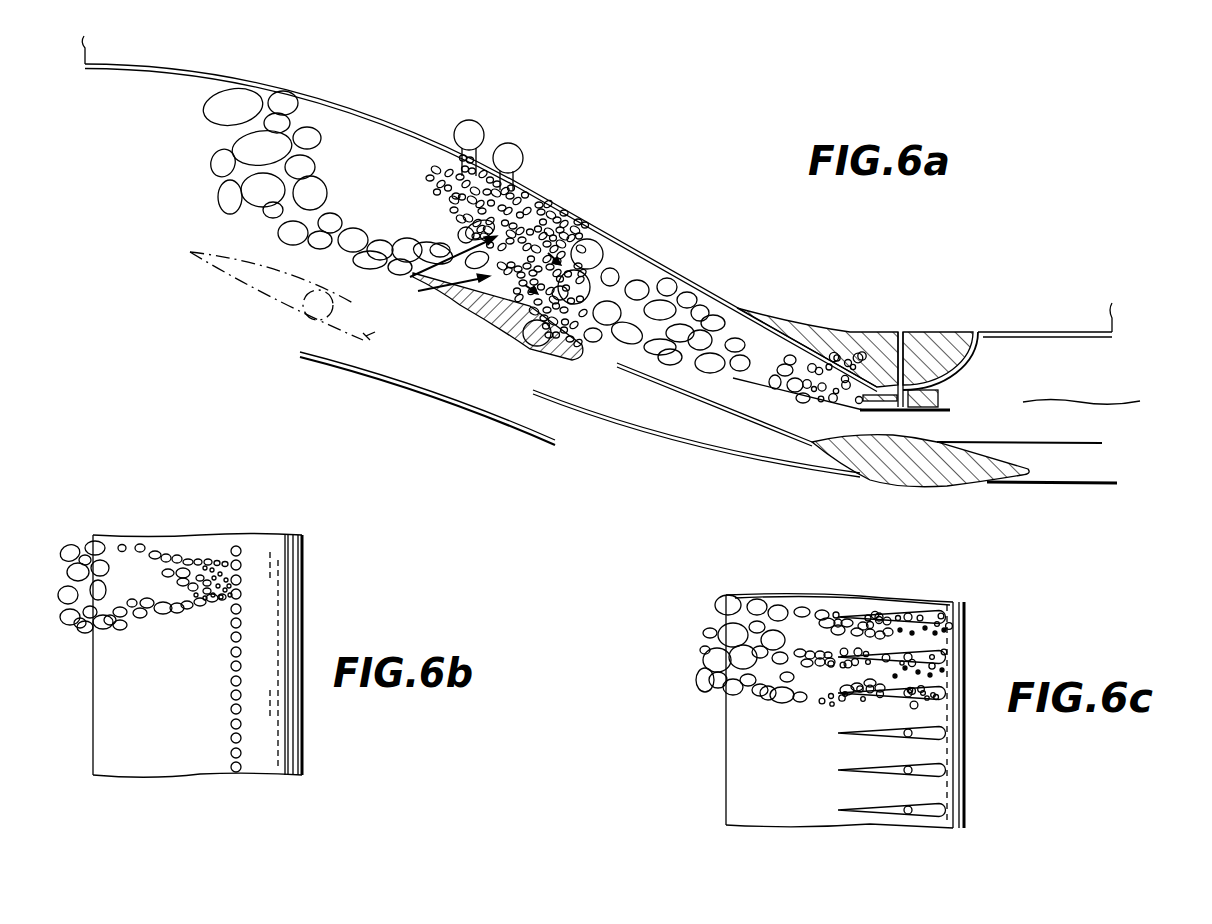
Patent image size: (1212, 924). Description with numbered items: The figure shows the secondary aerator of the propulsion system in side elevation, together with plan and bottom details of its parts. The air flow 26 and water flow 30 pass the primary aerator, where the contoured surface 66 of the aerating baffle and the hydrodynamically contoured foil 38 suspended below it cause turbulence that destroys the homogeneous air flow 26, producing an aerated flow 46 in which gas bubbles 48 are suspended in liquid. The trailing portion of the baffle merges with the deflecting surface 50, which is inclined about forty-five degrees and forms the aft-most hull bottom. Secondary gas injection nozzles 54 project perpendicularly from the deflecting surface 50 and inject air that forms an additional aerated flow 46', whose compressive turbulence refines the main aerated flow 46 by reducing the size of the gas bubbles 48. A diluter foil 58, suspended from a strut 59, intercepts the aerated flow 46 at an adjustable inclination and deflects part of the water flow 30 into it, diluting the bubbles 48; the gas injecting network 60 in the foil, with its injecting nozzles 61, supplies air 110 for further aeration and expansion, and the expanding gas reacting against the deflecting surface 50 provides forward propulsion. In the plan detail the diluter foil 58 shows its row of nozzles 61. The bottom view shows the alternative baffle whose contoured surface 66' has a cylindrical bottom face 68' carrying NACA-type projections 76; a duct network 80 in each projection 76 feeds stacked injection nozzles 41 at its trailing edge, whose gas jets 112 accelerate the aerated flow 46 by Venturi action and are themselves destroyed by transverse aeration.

In FIG. 6a, the deflecting surface 50 is at (208, 70).
In FIG. 6a, the secondary gas injection nozzles 54 is at (508, 143).
In FIG. 6a, the additional aerated flow 46' is at (503, 220).
In FIG. 6a, the aerated flow 46 is at (471, 191).
In FIG. 6c, the aerated flow 46 is at (763, 656).
In FIG. 6a, the gas bubbles 48 is at (648, 293).
In FIG. 6a, the strut 59 is at (595, 248).
In FIG. 6a, the injecting nozzles 61 is at (632, 290).
In FIG. 6b, the injecting nozzles 61 is at (241, 652).
In FIG. 6a, the air 110 is at (427, 273).
In FIG. 6b, the air 110 is at (70, 572).
In FIG. 6a, the gas injecting network 60 is at (527, 333).
In FIG. 6a, the diluter foil 58 is at (500, 323).
In FIG. 6b, the diluter foil 58 is at (107, 747).
In FIG. 6a, the contoured surface 66 is at (817, 334).
In FIG. 6a, the injection nozzles 41 is at (875, 330).
In FIG. 6c, the injection nozzles 41 is at (866, 813).
In FIG. 6a, the projections 76 is at (950, 408).
In FIG. 6c, the projections 76 is at (940, 603).
In FIG. 6a, the air flow 26 is at (1028, 372).
In FIG. 6a, the gas jets 112 is at (797, 403).
In FIG. 6c, the gas jets 112 is at (817, 663).
In FIG. 6a, the water flow 30 is at (683, 397).
In FIG. 6a, the contoured foil 38 is at (1020, 477).
In FIG. 6c, the bottom face 68' is at (839, 741).
In FIG. 6c, the duct network 80 is at (910, 813).
In FIG. 6c, the contoured surface 66' is at (842, 575).